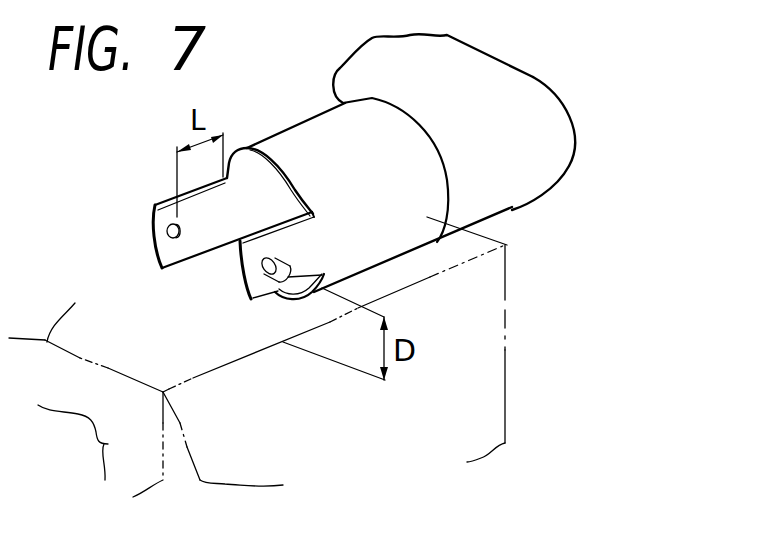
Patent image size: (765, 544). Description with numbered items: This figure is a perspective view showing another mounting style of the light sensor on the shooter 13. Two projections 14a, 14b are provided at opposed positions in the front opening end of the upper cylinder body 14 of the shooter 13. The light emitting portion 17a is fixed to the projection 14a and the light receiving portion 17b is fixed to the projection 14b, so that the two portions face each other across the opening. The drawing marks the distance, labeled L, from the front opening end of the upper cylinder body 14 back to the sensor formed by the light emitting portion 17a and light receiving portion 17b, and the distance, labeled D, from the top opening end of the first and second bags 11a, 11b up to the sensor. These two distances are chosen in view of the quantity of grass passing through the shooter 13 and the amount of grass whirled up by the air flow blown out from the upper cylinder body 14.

The shooter 13 is at (592, 128).
The upper cylinder body 14 is at (300, 137).
The projection 14a is at (187, 257).
The projection 14b is at (256, 298).
The light emitting portion 17a is at (167, 231).
The light receiving portion 17b is at (280, 262).
The first bag 11a is at (488, 395).
The second bag 11b is at (108, 443).